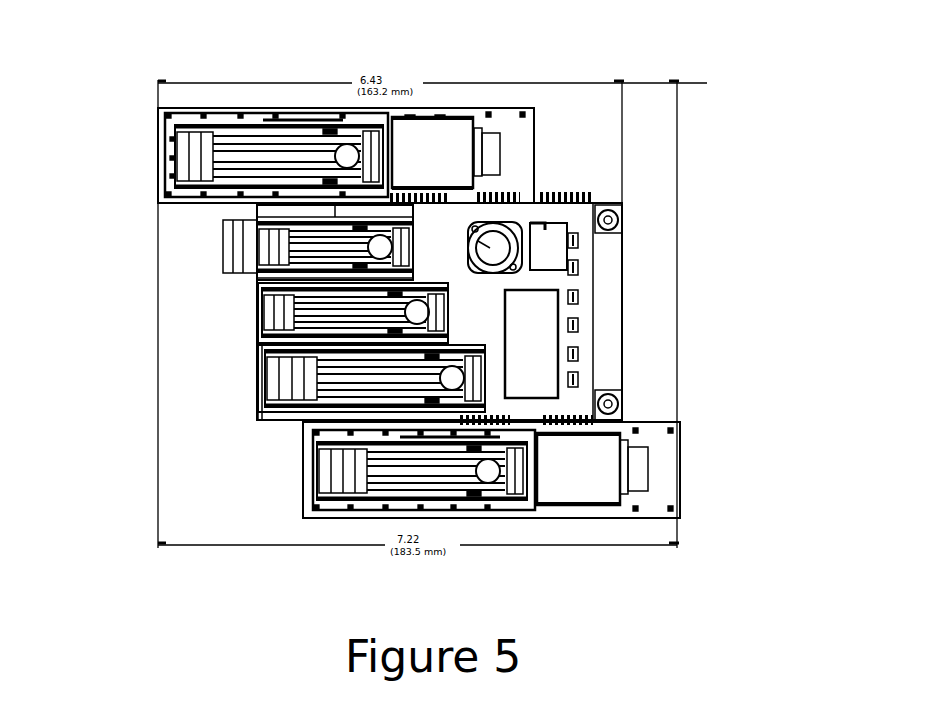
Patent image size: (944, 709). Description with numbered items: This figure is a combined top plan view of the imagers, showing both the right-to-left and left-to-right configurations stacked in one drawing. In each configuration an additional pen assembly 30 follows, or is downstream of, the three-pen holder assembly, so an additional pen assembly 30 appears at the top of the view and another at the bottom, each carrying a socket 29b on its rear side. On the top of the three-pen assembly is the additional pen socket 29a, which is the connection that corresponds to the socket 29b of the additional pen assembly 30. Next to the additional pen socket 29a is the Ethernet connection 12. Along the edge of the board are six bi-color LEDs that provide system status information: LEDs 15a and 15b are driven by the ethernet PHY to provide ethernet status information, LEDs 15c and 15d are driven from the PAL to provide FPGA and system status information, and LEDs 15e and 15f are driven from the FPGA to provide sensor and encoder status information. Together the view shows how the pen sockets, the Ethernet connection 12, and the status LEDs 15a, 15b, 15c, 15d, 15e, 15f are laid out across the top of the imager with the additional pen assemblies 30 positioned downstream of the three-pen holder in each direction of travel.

The additional pen assembly 30 is at (433, 148).
The socket 29b is at (493, 153).
The Ethernet connection 12 is at (553, 237).
The additional pen socket 29a is at (490, 246).
The bi-color LED 15a is at (580, 240).
The bi-color LED 15b is at (580, 267).
The bi-color LED 15c is at (580, 296).
The bi-color LED 15d is at (580, 323).
The bi-color LED 15e is at (580, 353).
The bi-color LED 15f is at (580, 378).